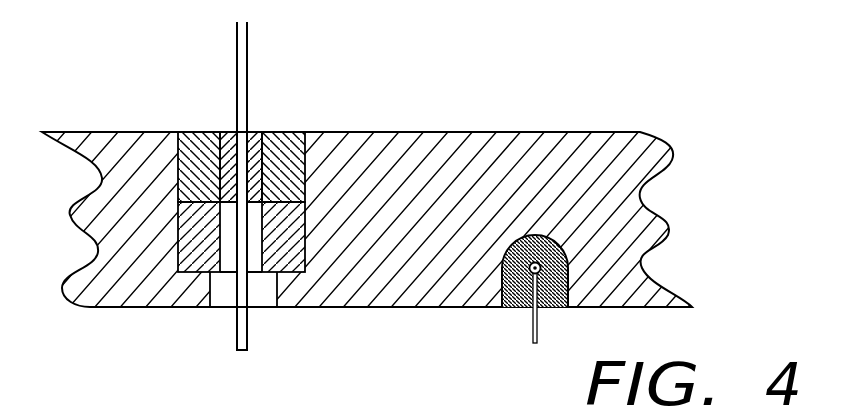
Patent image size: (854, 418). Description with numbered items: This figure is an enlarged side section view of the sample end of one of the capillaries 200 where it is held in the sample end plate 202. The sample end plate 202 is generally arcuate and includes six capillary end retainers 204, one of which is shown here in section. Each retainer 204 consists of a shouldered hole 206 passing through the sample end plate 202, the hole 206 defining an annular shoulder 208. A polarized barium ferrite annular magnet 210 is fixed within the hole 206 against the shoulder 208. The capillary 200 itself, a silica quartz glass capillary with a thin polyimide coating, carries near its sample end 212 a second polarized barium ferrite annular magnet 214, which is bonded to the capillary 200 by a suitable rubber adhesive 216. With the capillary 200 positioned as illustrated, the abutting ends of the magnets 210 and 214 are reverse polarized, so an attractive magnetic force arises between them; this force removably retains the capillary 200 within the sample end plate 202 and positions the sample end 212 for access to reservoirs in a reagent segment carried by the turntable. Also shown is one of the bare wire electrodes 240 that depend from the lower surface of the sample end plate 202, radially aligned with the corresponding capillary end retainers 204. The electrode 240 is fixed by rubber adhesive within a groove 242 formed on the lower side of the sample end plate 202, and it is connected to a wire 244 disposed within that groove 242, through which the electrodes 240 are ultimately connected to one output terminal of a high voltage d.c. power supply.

The capillary 200 is at (247, 58).
The sample end plate 202 is at (92, 131).
The capillary end retainer 204 is at (337, 120).
The shouldered hole 206 is at (152, 311).
The annular shoulder 208 is at (304, 265).
The polarized barium ferrite annular magnet 210 is at (207, 258).
The sample end 212 is at (248, 327).
The second polarized barium ferrite annular magnet 214 is at (303, 188).
The rubber adhesive 216 is at (256, 131).
The bare wire electrode 240 is at (531, 333).
The groove 242 is at (537, 234).
The wire 244 is at (506, 252).